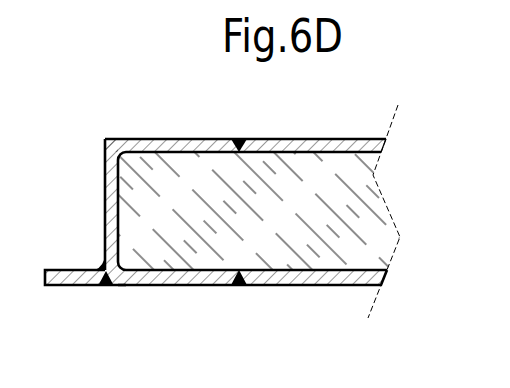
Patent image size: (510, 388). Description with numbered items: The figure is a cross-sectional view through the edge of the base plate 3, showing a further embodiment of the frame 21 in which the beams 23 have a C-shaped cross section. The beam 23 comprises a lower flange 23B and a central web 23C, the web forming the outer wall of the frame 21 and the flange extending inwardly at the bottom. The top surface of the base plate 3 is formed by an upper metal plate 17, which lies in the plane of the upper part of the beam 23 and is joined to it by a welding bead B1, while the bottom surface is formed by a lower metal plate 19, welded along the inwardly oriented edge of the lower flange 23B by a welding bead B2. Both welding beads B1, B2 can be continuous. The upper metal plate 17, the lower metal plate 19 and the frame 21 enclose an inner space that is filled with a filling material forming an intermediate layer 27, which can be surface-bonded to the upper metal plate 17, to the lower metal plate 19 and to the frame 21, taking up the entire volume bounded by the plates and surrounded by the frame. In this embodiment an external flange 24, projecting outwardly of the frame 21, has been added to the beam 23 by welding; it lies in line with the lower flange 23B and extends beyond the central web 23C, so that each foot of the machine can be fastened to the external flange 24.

The base plate 3 is at (408, 160).
The upper metal plate 17 is at (316, 139).
The lower metal plate 19 is at (332, 286).
The frame 21 is at (181, 108).
The beam 23 is at (98, 205).
The lower flange 23B is at (182, 286).
The central web 23C is at (105, 197).
The external flange 24 is at (68, 286).
The intermediate layer 27 is at (312, 227).
The welding bead B1 is at (238, 139).
The welding bead B2 is at (239, 287).